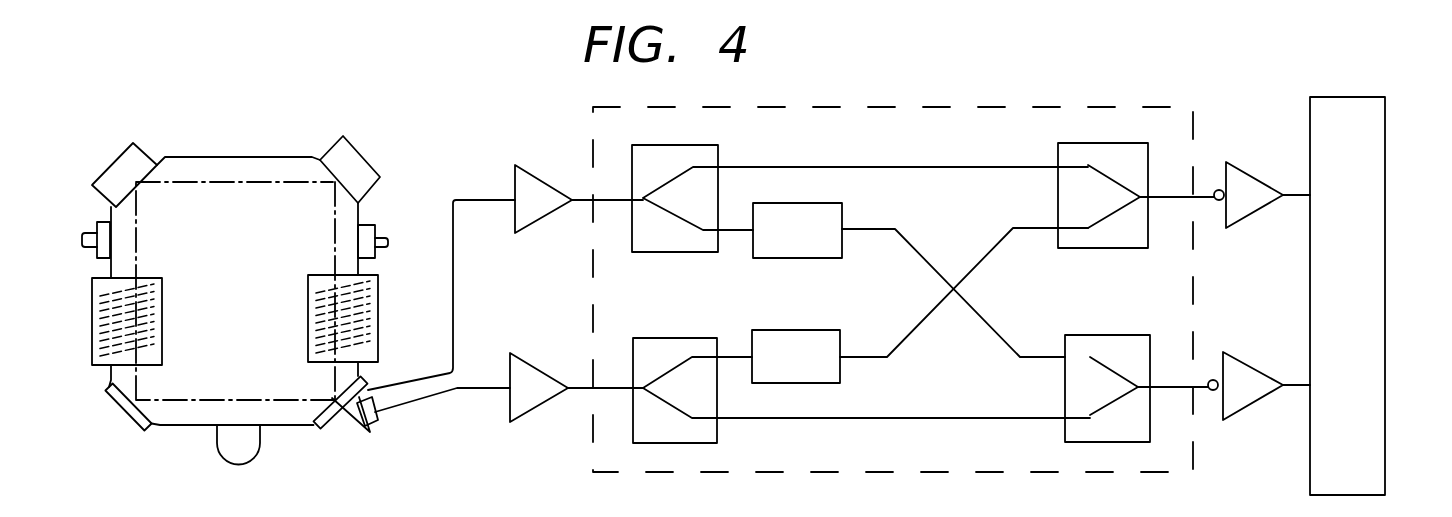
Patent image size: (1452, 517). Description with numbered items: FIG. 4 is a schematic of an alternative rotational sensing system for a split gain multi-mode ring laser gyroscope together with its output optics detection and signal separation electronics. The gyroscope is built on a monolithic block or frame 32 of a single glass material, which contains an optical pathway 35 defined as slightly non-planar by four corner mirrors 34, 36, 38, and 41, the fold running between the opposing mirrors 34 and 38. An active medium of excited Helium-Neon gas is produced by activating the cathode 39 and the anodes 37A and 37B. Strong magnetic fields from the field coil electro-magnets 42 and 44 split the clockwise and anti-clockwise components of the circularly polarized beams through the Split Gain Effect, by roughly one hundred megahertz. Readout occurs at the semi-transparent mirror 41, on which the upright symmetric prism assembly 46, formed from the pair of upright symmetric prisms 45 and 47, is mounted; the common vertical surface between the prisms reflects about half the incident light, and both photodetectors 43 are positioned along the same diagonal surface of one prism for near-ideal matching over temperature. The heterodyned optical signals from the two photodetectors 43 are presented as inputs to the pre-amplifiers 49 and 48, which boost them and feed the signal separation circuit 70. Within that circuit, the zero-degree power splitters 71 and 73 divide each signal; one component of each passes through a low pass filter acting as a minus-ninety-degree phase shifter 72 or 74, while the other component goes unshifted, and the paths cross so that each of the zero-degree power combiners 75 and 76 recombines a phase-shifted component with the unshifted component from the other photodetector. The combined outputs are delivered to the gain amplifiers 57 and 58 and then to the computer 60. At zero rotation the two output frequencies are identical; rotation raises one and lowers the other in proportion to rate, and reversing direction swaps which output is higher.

The monolithic block or frame 32 is at (227, 155).
The corner mirror 34 is at (365, 158).
The optical pathway 35 is at (270, 185).
The corner mirror 36 is at (122, 146).
The anode 37A is at (367, 224).
The anode 37B is at (107, 253).
The corner mirror 38 is at (151, 431).
The cathode 39 is at (235, 461).
The semi-transparent mirror 41 is at (318, 430).
The field coil electro-magnet 42 is at (92, 348).
The photodetectors 43 is at (380, 415).
The field coil electro-magnet 44 is at (378, 325).
The upright symmetric prism 45 is at (343, 428).
The upright symmetric prism assembly 46 is at (368, 432).
The upright symmetric prism 47 is at (375, 390).
The pre-amplifier 48 is at (537, 367).
The pre-amplifier 49 is at (536, 192).
The gain amplifier 57 is at (1247, 218).
The gain amplifier 58 is at (1232, 415).
The computer 60 is at (1385, 253).
The signal separation circuit 70 is at (980, 107).
The 0° power splitter 71 is at (702, 152).
The −90° phase shifter 72 is at (798, 203).
The 0° power splitter 73 is at (662, 338).
The −90° phase shifter 74 is at (802, 330).
The 0° power combiner 75 is at (1125, 250).
The 0° power combiner 76 is at (1087, 442).